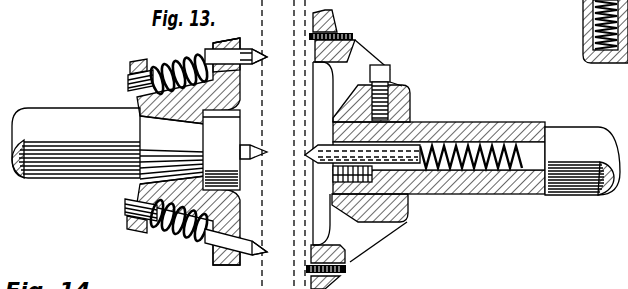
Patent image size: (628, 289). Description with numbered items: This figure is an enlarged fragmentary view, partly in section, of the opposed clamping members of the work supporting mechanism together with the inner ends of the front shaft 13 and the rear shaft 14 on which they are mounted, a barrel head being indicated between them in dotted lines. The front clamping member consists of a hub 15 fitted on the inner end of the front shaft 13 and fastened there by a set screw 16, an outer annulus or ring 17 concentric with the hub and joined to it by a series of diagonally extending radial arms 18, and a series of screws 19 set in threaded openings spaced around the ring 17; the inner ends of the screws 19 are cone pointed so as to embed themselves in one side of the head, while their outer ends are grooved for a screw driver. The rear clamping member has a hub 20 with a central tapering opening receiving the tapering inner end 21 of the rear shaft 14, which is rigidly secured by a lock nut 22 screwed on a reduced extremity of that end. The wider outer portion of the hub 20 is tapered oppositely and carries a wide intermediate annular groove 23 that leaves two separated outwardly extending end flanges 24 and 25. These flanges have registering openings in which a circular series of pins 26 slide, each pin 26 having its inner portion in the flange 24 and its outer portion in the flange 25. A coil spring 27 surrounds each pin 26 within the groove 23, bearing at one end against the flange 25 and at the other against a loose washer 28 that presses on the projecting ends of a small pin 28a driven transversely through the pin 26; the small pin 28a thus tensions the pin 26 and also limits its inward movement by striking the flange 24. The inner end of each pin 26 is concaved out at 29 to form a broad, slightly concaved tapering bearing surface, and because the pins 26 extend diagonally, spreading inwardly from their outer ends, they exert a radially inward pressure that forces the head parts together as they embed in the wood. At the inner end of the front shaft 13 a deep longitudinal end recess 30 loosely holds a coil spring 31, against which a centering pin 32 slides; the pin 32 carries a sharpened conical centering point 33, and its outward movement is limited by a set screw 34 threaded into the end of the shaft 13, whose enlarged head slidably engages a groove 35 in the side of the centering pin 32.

The front shaft 13 is at (582, 161).
The rear shaft 14 is at (76, 143).
The hub 15 is at (411, 95).
The set screw 16 is at (385, 70).
The outer annulus or ring 17 is at (331, 20).
The radial arms 18 is at (360, 151).
The screws 19 is at (354, 37).
The hub 20 is at (138, 98).
The tapering inner end 21 is at (172, 150).
The lock nut 22 is at (235, 150).
The annular groove 23 is at (150, 232).
The end flange 24 is at (237, 41).
The end flange 25 is at (129, 65).
The pins 26 is at (127, 82).
The coil spring 27 is at (176, 62).
The washer 28 is at (246, 66).
The small pin 28a is at (215, 52).
The concaved portion 29 is at (261, 58).
The end recess 30 is at (510, 175).
The coil spring 31 is at (462, 175).
The centering pin 32 is at (430, 141).
The centering point 33 is at (322, 147).
The set screw 34 is at (336, 178).
The groove 35 is at (333, 170).